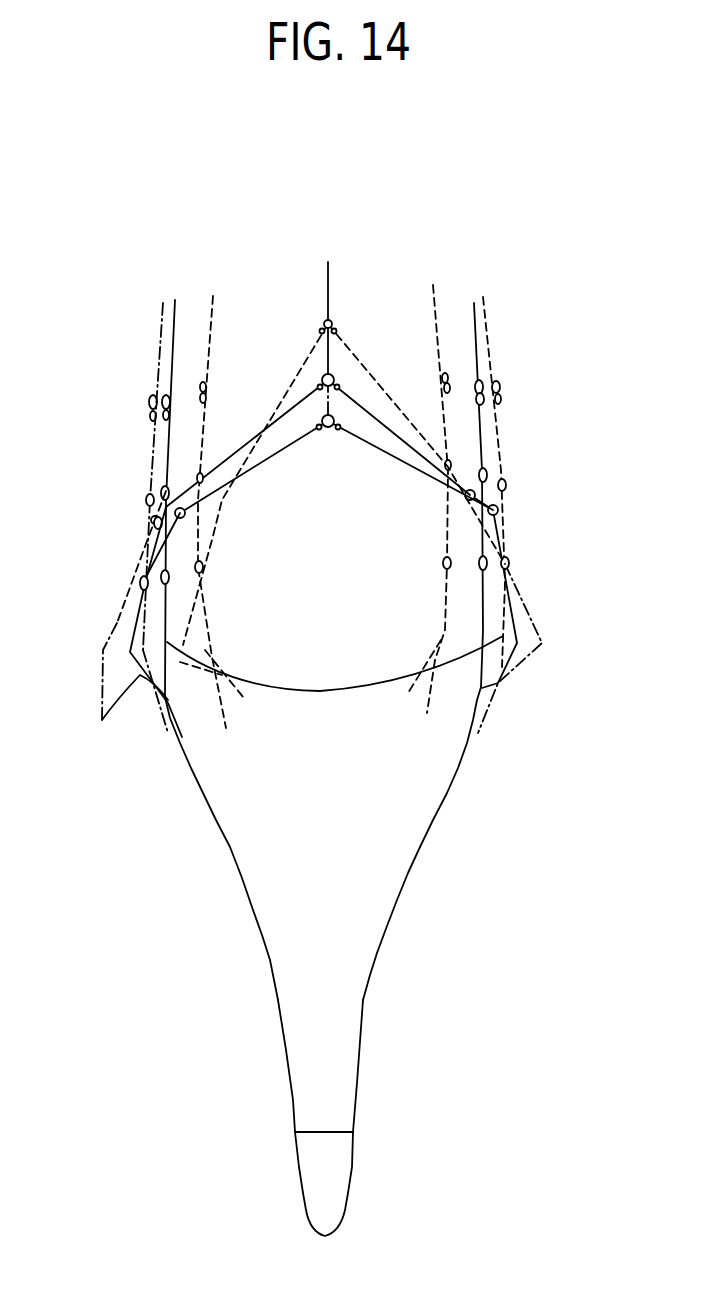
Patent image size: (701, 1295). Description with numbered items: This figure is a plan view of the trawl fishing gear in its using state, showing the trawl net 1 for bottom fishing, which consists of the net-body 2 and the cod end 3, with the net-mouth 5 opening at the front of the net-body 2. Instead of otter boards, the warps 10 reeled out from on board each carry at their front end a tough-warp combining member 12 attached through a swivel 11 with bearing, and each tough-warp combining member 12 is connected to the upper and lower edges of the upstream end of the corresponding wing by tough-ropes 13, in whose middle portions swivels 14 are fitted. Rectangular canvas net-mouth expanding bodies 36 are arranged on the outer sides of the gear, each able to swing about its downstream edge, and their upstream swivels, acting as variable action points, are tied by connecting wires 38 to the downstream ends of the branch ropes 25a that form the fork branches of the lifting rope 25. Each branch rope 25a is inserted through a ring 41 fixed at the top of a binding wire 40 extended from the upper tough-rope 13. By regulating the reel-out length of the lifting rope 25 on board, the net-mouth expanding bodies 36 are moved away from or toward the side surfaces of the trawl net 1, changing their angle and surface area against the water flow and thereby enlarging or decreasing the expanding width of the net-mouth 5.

The trawl net 1 is at (408, 885).
The net-body 2 is at (362, 977).
The cod end 3 is at (347, 1182).
The net-mouth 5 is at (302, 690).
The warps 10 is at (210, 328).
The swivels with bearing 11 is at (203, 383).
The tough-warp combining member 12 is at (160, 428).
The tough-rope 13 is at (163, 465).
The swivels 14 is at (148, 482).
The lifting rope 25 is at (328, 282).
The branch ropes 25a is at (283, 412).
The net-mouth expanding bodies 36 is at (102, 720).
The connecting wires 38 is at (133, 625).
The binding wire 40 is at (158, 523).
The ring 41 is at (180, 513).